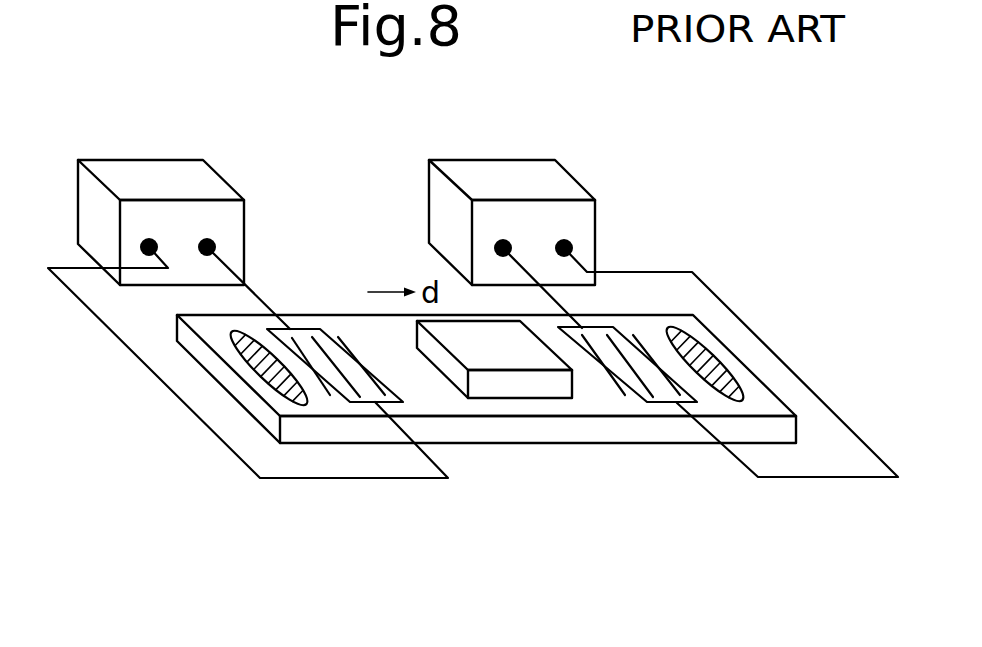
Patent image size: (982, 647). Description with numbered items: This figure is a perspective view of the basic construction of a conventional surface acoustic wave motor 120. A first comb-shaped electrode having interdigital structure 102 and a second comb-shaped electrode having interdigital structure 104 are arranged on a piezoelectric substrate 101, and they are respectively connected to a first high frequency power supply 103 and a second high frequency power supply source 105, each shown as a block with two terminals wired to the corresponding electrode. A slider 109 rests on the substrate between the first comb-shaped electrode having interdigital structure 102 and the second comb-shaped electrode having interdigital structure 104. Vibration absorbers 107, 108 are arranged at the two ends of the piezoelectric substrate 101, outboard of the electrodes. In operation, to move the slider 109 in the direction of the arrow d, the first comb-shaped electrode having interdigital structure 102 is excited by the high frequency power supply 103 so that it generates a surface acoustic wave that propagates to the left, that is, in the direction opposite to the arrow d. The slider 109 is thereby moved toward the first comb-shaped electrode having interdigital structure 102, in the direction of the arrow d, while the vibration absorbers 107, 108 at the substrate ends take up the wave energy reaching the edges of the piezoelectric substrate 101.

The surface acoustic wave motor 120 is at (480, 505).
The piezoelectric substrate 101 is at (652, 320).
The first comb-shaped electrode having interdigital structure 102 is at (657, 402).
The first high frequency power supply 103 is at (515, 170).
The second comb-shaped electrode having interdigital structure 104 is at (357, 402).
The second high frequency power supply source 105 is at (140, 168).
The vibration absorber 107 is at (740, 402).
The vibration absorber 108 is at (288, 402).
The slider 109 is at (542, 390).